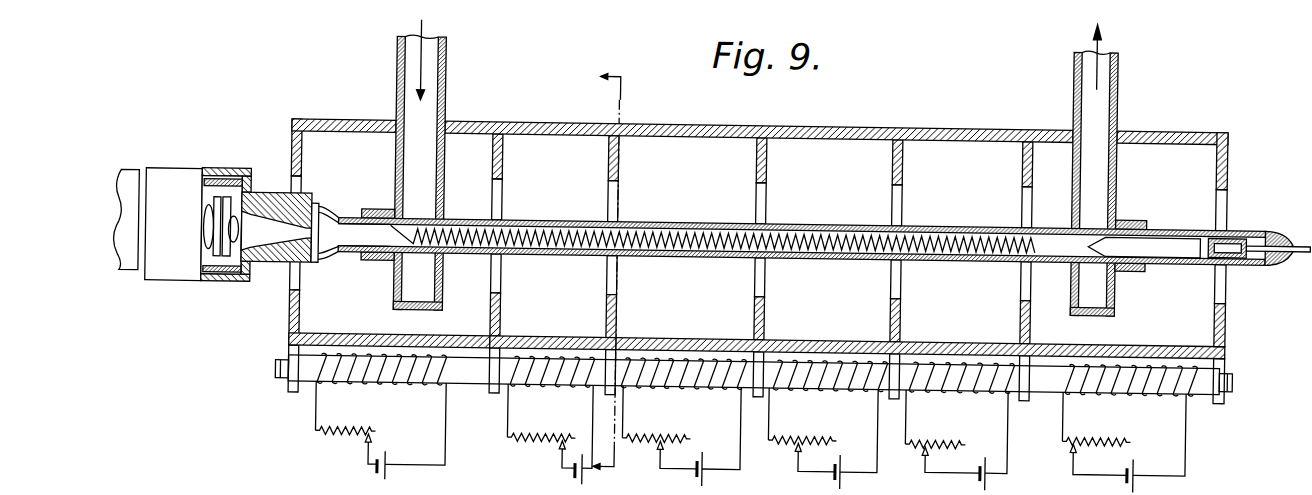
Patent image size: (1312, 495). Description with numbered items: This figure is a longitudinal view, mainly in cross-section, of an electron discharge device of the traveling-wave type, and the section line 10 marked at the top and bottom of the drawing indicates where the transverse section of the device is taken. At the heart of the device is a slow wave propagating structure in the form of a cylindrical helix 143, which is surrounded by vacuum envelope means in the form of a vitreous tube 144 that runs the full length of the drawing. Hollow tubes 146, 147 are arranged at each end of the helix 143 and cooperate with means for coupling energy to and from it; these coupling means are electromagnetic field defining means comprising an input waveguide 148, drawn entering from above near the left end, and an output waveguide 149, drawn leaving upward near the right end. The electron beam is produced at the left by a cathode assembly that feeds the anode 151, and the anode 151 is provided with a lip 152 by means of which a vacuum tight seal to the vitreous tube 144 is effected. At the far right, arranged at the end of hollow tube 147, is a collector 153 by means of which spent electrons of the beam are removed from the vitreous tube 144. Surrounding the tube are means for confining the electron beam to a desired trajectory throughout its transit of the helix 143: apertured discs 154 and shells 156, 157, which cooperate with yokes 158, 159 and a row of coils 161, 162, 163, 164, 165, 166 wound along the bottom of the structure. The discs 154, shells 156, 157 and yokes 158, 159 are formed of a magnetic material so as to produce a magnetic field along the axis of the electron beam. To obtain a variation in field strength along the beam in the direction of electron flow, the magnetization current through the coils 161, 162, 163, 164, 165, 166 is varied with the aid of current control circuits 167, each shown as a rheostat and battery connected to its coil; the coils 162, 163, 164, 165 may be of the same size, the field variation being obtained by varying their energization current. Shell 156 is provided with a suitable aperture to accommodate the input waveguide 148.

The section line 10- 10 is at (610, 268).
The cylindrical helix 143 is at (462, 248).
The vitreous tube 144 is at (556, 216).
The hollow tube 146 is at (354, 237).
The hollow tube 147 is at (1174, 237).
The input waveguide 148 is at (429, 170).
The output waveguide 149 is at (1101, 156).
The anode 151 is at (260, 269).
The lip 152 is at (320, 202).
The collector 153 is at (1245, 223).
The apertured discs 154 is at (293, 309).
The shell 156 is at (355, 335).
The shell 157 is at (538, 335).
The yoke 158 is at (469, 381).
The yoke 159 is at (531, 380).
The coil 161 is at (416, 381).
The coil 162 is at (566, 381).
The coil 163 is at (688, 383).
The coil 164 is at (826, 381).
The coil 165 is at (959, 374).
The coil 166 is at (1154, 367).
The current control circuit 167 is at (352, 429).